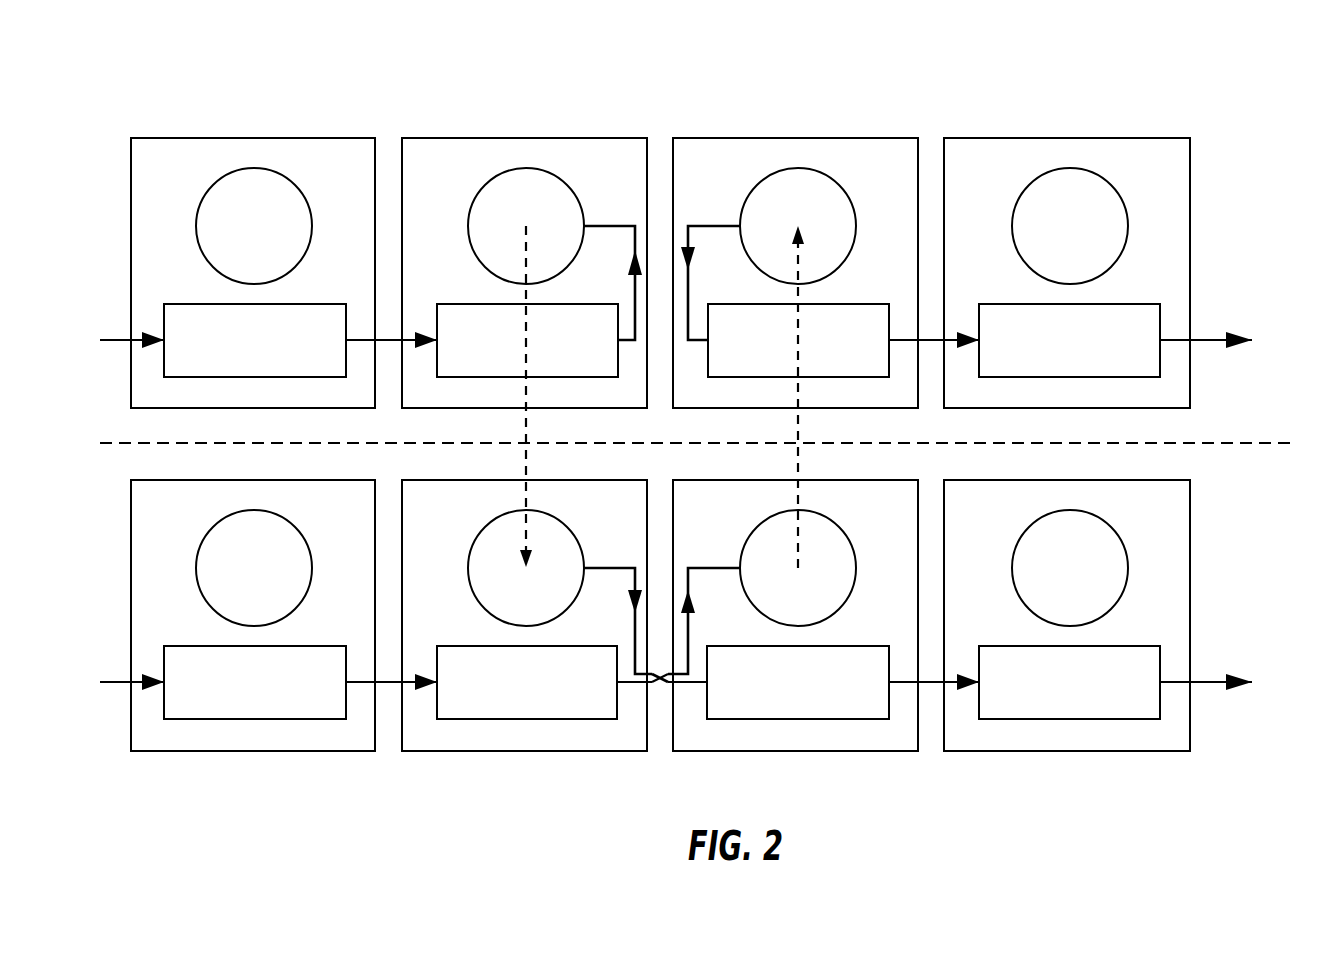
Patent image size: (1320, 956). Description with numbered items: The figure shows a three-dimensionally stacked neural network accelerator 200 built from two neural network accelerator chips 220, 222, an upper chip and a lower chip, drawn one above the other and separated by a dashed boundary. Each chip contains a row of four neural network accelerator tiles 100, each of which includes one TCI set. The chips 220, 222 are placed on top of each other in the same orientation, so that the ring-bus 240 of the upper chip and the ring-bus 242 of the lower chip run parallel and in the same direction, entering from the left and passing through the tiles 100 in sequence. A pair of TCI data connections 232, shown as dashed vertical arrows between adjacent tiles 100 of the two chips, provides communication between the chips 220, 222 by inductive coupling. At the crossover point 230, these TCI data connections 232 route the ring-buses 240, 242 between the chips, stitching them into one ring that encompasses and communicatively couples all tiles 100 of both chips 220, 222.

The neural network accelerator tile 100 is at (301, 138).
The three-dimensionally stacked neural network accelerator 200 is at (205, 55).
The neural network accelerator chip 220 is at (706, 287).
The neural network accelerator chip 222 is at (706, 629).
The crossover point 230 is at (665, 690).
The TCI data connections 232 is at (797, 455).
The ring-bus 240 is at (136, 325).
The ring-bus 242 is at (137, 698).